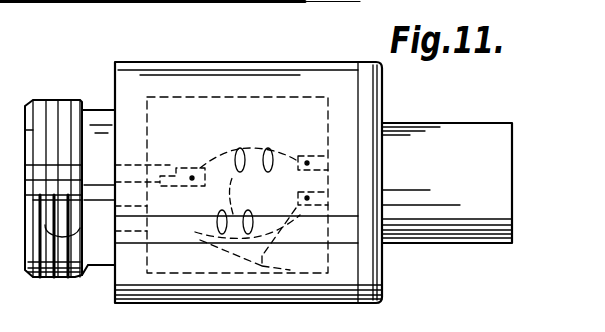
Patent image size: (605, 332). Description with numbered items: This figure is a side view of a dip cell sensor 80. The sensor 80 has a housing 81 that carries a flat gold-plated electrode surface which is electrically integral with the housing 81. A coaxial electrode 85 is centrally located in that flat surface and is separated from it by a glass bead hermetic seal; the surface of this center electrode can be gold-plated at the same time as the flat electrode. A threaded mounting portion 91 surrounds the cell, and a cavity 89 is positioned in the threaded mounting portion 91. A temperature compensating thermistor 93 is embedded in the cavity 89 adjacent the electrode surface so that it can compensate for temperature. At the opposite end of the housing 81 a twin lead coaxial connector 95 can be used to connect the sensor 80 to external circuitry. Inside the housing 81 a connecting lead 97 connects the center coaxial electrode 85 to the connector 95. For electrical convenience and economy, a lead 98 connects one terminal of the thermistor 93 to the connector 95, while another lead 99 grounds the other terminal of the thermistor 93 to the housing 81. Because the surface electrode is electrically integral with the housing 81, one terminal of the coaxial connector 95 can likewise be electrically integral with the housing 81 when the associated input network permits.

The sensor 80 is at (277, 53).
The housing 81 is at (206, 74).
The coaxial electrode 85 is at (165, 164).
The cavity 89 is at (106, 268).
The threaded mounting portion 91 is at (70, 117).
The temperature compensating thermistor 93 is at (74, 278).
The twin lead coaxial connector 95 is at (464, 133).
The connecting lead 97 is at (250, 142).
The lead 98 is at (240, 198).
The lead 99 is at (262, 256).